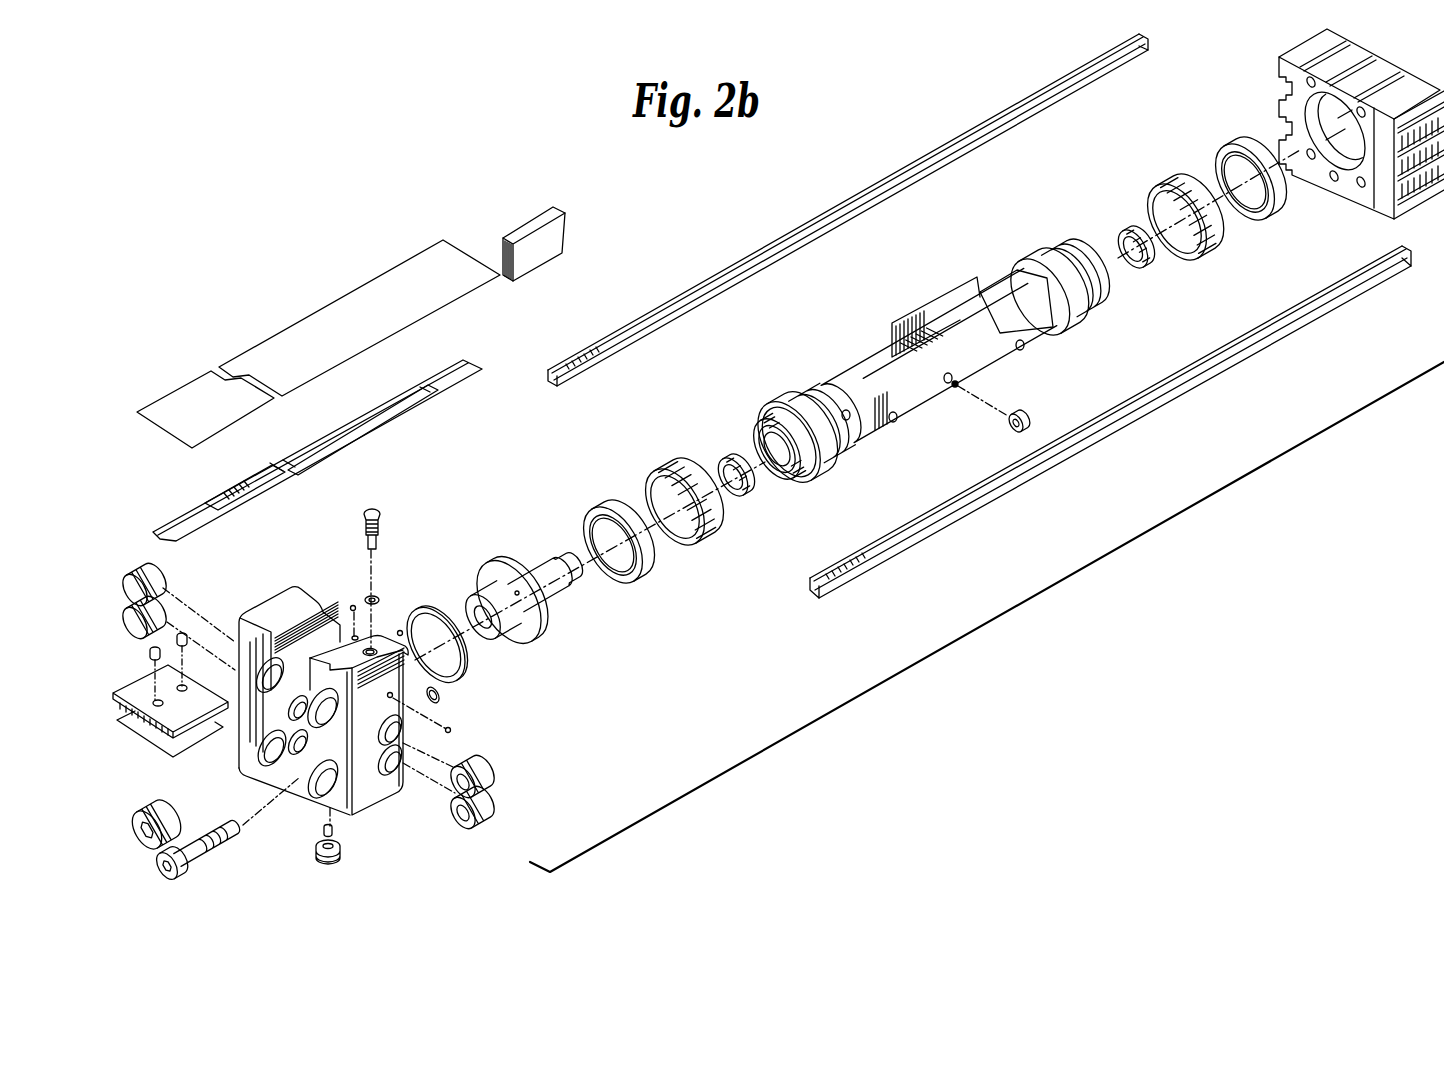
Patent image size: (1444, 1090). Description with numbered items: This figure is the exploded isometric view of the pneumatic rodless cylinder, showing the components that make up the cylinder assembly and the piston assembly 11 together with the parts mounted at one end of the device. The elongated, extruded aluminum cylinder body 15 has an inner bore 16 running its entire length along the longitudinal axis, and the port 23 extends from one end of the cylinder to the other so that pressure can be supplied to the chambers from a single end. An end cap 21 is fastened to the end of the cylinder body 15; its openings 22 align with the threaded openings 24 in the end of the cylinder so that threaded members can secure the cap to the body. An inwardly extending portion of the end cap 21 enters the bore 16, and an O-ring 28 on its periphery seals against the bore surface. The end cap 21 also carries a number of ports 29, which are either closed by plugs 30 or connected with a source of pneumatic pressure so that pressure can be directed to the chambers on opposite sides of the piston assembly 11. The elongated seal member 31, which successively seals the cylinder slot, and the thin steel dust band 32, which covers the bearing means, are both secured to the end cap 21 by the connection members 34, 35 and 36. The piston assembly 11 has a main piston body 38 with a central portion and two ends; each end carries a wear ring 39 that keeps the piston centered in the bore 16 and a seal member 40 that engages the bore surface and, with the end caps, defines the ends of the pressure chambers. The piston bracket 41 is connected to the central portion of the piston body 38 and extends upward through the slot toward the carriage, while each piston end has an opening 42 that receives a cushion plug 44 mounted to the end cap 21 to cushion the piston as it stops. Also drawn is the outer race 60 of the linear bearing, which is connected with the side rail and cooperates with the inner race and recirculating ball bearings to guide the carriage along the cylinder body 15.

The piston assembly 11 is at (931, 360).
The cylinder body 15 is at (1328, 141).
The inner bore 16 is at (1322, 113).
The end cap 21 is at (337, 741).
The openings 22 is at (257, 693).
The port 23 is at (1334, 181).
The threaded openings 24 is at (1361, 188).
The O-ring 28 is at (422, 610).
The ports 29 is at (391, 772).
The plugs 30 is at (160, 572).
The seal member 31 is at (383, 407).
The dust band 32 is at (362, 298).
The connection member 34 is at (172, 752).
The connection member 35 is at (532, 223).
The connection member 36 is at (145, 700).
The main piston body 38 is at (927, 402).
The wear ring 39 is at (707, 545).
The seal member 40 is at (633, 578).
The piston bracket 41 is at (953, 310).
The opening 42 is at (772, 478).
The cushion plug 44 is at (543, 573).
The outer race 60 is at (700, 281).